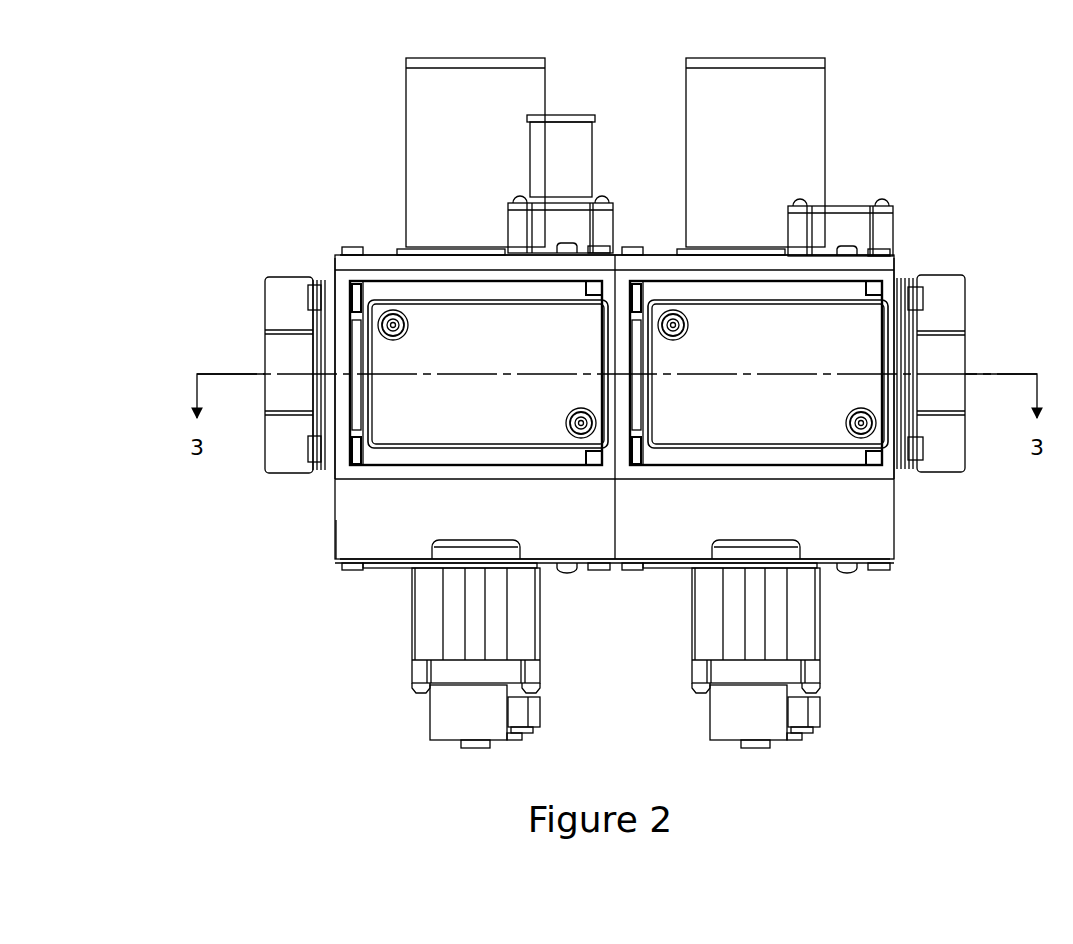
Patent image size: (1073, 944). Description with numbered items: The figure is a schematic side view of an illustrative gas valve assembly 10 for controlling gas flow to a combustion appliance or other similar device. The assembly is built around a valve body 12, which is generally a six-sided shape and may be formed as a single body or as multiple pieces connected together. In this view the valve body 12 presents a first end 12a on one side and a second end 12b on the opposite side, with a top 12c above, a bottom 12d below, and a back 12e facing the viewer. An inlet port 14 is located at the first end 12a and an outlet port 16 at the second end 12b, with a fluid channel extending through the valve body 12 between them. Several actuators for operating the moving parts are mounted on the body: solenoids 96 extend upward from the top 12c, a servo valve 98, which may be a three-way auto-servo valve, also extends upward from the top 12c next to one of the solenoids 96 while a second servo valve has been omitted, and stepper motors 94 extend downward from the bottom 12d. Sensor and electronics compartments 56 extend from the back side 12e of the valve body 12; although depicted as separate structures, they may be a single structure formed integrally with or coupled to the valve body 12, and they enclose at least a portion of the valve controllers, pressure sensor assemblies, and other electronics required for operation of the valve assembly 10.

The valve assembly 10 is at (212, 112).
The valve body 12 is at (335, 500).
The first end 12a is at (331, 258).
The second end 12b is at (899, 258).
The top 12c is at (375, 248).
The bottom 12d is at (377, 571).
The back 12e is at (345, 541).
The inlet port 14 is at (265, 310).
The outlet port 16 is at (965, 307).
The sensor and electronics compartments 56 is at (475, 430).
The stepper motors 94 is at (540, 626).
The solenoids 96 is at (415, 160).
The servo valve 98 is at (568, 130).